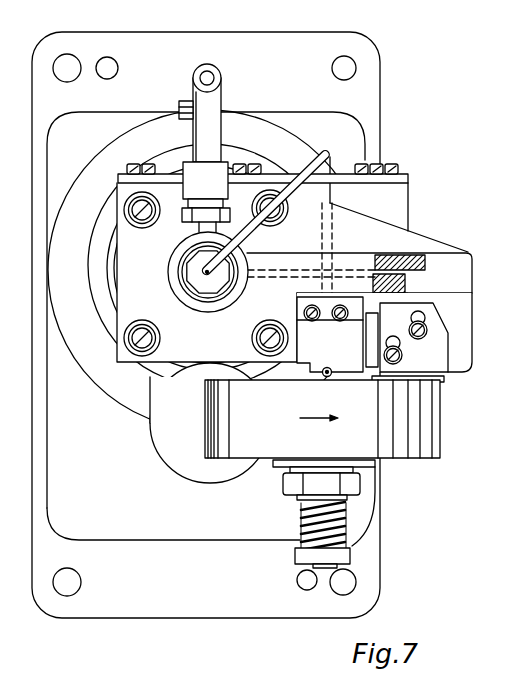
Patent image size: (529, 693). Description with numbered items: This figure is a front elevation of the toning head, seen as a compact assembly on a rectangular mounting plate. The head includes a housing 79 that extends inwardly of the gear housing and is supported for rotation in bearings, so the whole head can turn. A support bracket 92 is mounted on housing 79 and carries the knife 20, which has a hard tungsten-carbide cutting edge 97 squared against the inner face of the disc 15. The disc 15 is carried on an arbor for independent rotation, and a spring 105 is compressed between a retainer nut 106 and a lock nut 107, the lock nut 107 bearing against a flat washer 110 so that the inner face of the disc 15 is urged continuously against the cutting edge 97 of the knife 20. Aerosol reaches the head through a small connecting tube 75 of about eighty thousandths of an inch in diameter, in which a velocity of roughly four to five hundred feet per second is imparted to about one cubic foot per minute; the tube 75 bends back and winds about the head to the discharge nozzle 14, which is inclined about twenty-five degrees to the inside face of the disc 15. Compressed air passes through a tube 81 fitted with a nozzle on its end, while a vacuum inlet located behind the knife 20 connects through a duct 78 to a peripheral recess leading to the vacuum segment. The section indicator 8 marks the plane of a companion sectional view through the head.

The section line 8- 8 is at (207, 66).
The discharge nozzle 14 is at (332, 378).
The disc 15 is at (428, 425).
The knife 20 is at (420, 366).
The connecting tube 75 is at (334, 153).
The duct 78 is at (420, 269).
The housing 79 is at (407, 199).
The tube 81 is at (223, 78).
The support bracket 92 is at (466, 281).
The cutting edge 97 is at (438, 380).
The spring 105 is at (306, 508).
The retainer nut 106 is at (299, 551).
The lock nut 107 is at (352, 472).
The flat washer 110 is at (362, 460).